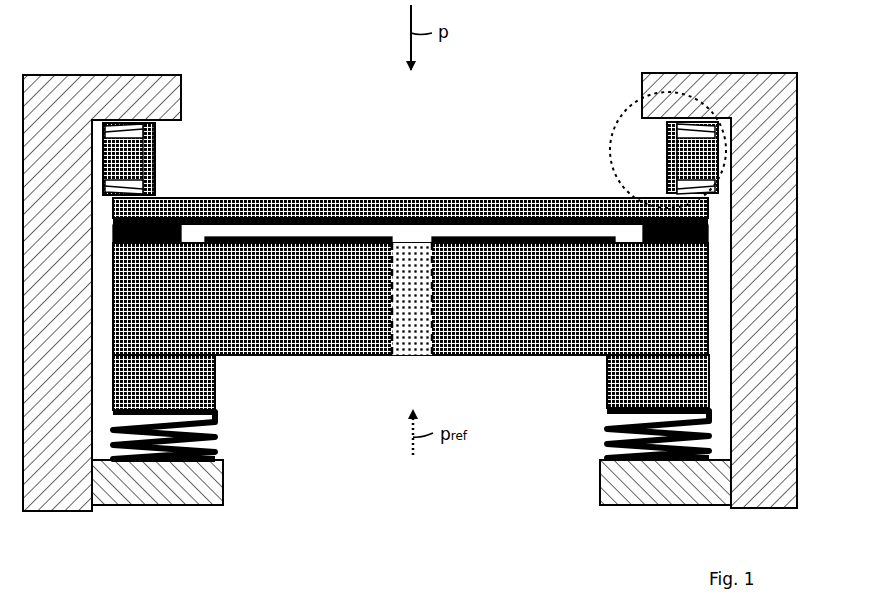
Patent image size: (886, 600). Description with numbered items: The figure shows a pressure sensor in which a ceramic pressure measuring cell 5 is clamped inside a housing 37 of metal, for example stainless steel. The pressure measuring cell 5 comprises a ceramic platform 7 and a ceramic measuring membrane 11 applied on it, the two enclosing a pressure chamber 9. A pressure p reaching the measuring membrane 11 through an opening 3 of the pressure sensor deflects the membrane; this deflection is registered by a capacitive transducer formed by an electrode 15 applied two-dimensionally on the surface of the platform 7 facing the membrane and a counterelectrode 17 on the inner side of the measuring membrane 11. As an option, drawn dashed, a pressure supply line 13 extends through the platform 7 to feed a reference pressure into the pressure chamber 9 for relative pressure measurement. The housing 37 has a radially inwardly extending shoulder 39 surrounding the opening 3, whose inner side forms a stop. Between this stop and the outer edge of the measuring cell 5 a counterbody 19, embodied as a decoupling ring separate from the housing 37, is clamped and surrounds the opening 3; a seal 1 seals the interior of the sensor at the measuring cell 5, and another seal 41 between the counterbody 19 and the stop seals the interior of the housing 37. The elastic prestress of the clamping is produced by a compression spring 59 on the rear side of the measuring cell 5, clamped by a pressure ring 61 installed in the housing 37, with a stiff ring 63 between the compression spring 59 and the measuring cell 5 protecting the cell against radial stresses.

The seal 1 is at (668, 187).
The opening 3 is at (412, 142).
The pressure measuring cell 5 is at (280, 175).
The platform 7 is at (495, 337).
The pressure chamber 9 is at (408, 232).
The measuring membrane 11 is at (470, 205).
The pressure supply line 13 is at (423, 306).
The electrode 15 is at (348, 245).
The counterelectrode 17 is at (518, 218).
The counterbody 19 is at (695, 162).
The housing 37 is at (775, 280).
The shoulder 39 is at (680, 95).
The seal 41 is at (668, 129).
The compression spring 59 is at (215, 437).
The pressure ring 61 is at (212, 484).
The ring 63 is at (208, 388).